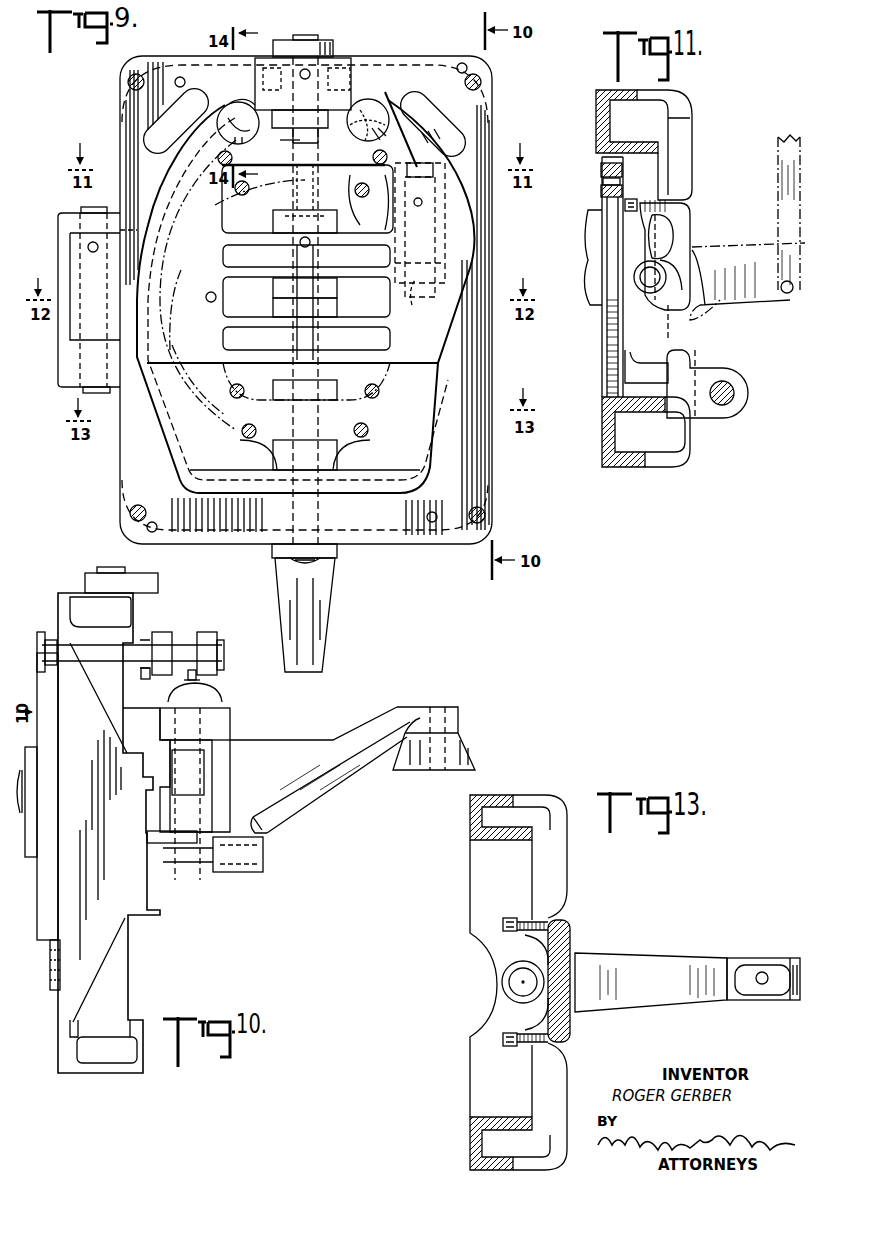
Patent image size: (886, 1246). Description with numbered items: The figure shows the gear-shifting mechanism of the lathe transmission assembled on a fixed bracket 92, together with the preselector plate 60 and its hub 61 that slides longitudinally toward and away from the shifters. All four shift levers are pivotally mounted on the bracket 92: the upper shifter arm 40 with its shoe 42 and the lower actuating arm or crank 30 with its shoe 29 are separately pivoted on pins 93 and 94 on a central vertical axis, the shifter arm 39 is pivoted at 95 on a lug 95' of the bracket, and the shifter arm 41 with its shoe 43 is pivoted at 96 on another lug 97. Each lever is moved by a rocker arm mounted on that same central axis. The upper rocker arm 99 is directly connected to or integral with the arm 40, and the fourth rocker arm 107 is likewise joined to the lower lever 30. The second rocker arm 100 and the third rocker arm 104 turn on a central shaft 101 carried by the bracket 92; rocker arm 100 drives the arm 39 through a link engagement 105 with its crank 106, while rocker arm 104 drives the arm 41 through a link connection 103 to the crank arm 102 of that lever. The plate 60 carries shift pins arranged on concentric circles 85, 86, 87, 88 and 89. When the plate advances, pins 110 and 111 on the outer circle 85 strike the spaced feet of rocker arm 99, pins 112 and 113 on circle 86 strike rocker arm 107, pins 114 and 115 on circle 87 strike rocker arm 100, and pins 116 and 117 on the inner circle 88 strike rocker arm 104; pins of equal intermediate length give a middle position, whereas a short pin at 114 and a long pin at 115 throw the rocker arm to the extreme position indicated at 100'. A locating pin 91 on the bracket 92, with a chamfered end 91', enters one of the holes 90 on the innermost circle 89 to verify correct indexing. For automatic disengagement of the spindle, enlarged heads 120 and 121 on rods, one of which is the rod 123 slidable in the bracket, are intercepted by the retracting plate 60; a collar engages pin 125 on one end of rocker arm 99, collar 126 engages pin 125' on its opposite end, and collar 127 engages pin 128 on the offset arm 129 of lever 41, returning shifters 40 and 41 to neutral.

In FIG. 9, the shoe 29 is at (322, 610).
In FIG. 13, the shoe 29 is at (750, 965).
In FIG. 9, the actuating arm or crank 30 is at (341, 553).
In FIG. 13, the actuating arm or crank 30 is at (665, 960).
In FIG. 9, the actuating arm 39 is at (60, 266).
In FIG. 9, the shifting arm 40 is at (340, 48).
In FIG. 9, the shifting arm 41 is at (385, 198).
In FIG. 10, the shifting arm 41 is at (346, 762).
In FIG. 9, the shoe 42 is at (332, 103).
In FIG. 10, the shoe 43 is at (463, 752).
In FIG. 10, the preselector plate 60 is at (52, 972).
In FIG. 11, the preselector plate 60 is at (600, 372).
In FIG. 10, the hub 61 is at (25, 830).
In FIG. 11, the hub 61 is at (585, 235).
In FIG. 9, the outer concentric circle 85 is at (215, 205).
In FIG. 9, the concentric circle 86 is at (172, 345).
In FIG. 9, the concentric circle 87 is at (181, 270).
In FIG. 9, the inner concentric circle 88 is at (178, 336).
In FIG. 9, the innermost concentric circle 89 is at (222, 285).
In FIG. 11, the locating holes 90 is at (601, 168).
In FIG. 9, the locating pin 91 is at (271, 304).
In FIG. 11, the locating pin 91 is at (595, 197).
In FIG. 11, the chamfered end 91' is at (590, 181).
In FIG. 9, the bracket 92 is at (482, 460).
In FIG. 10, the bracket 92 is at (120, 990).
In FIG. 11, the bracket 92 is at (672, 467).
In FIG. 13, the bracket 92 is at (552, 875).
In FIG. 9, the pivot pin 93 is at (315, 40).
In FIG. 10, the pivot pin 93 is at (120, 552).
In FIG. 9, the pivot pin 94 is at (315, 565).
In FIG. 13, the pivot pin 94 is at (515, 982).
In FIG. 9, the pivot 95 is at (96, 198).
In FIG. 9, the lug 95' is at (65, 369).
In FIG. 9, the pivot 96 is at (412, 305).
In FIG. 10, the pivot 96 is at (160, 833).
In FIG. 11, the pivot 96 is at (738, 390).
In FIG. 9, the lug 97 is at (442, 272).
In FIG. 10, the lug 97 is at (160, 797).
In FIG. 11, the lug 97 is at (733, 372).
In FIG. 9, the upper rocker arm 99 is at (293, 151).
In FIG. 9, the second rocker arm 100 is at (283, 199).
In FIG. 11, the second rocker arm 100 is at (688, 266).
In FIG. 11, the extreme position of rocker arm 100' is at (732, 316).
In FIG. 9, the central shaft 101 is at (292, 258).
In FIG. 11, the central shaft 101 is at (662, 300).
In FIG. 10, the crank arm 102 is at (263, 829).
In FIG. 10, the link connection 103 is at (196, 860).
In FIG. 9, the third rocker arm 104 is at (250, 398).
In FIG. 11, the link engagement 105 is at (792, 180).
In FIG. 11, the crank 106 is at (748, 246).
In FIG. 9, the fourth rocker arm 107 is at (268, 447).
In FIG. 13, the fourth rocker arm 107 is at (560, 940).
In FIG. 9, the shift pin 110 is at (221, 163).
In FIG. 9, the shift pin 111 is at (434, 130).
In FIG. 9, the shift pin 112 is at (242, 431).
In FIG. 13, the shift pin 112 is at (512, 918).
In FIG. 9, the shift pin 113 is at (368, 430).
In FIG. 13, the shift pin 113 is at (511, 1046).
In FIG. 9, the shift pin 114 is at (237, 192).
In FIG. 11, the shift pin 114 is at (642, 193).
In FIG. 9, the shift pin 115 is at (375, 157).
In FIG. 11, the shift pin 115 is at (646, 366).
In FIG. 9, the shift pin 116 is at (230, 391).
In FIG. 9, the shift pin 117 is at (380, 392).
In FIG. 9, the enlarged head 120 is at (243, 103).
In FIG. 9, the enlarged head 121 is at (374, 125).
In FIG. 10, the enlarged head 121 is at (38, 632).
In FIG. 10, the rod 123 is at (146, 643).
In FIG. 9, the pin 125 is at (238, 123).
In FIG. 9, the pin 125' is at (406, 130).
In FIG. 10, the pin 125' is at (120, 670).
In FIG. 10, the collar 126 is at (168, 635).
In FIG. 10, the collar 127 is at (210, 635).
In FIG. 9, the pin 128 is at (366, 112).
In FIG. 10, the pin 128 is at (186, 680).
In FIG. 10, the offset or arm 129 is at (222, 695).